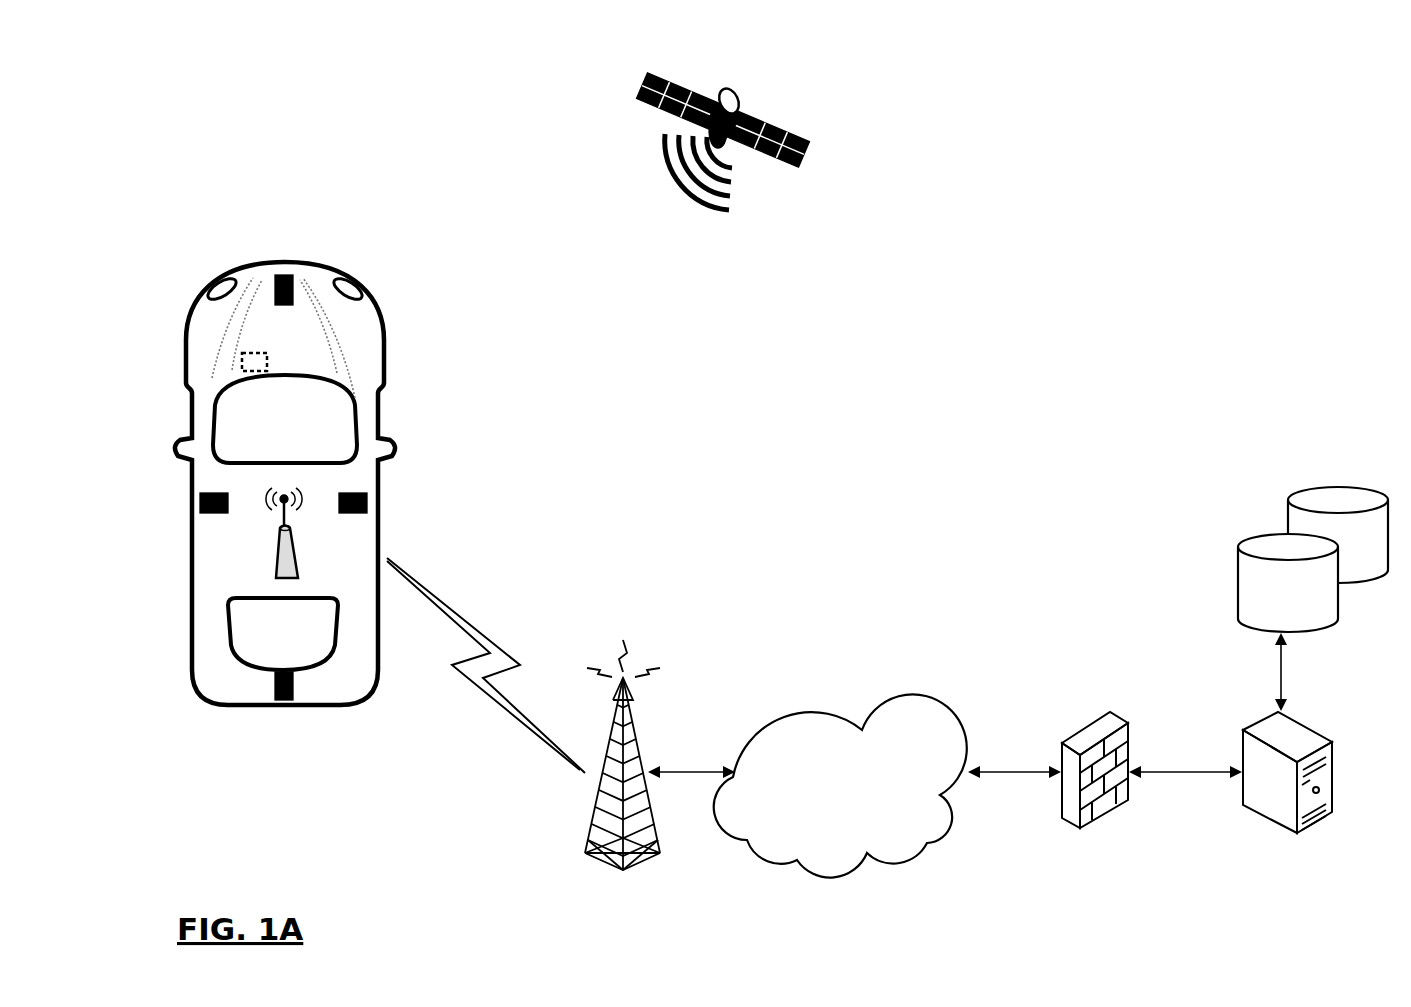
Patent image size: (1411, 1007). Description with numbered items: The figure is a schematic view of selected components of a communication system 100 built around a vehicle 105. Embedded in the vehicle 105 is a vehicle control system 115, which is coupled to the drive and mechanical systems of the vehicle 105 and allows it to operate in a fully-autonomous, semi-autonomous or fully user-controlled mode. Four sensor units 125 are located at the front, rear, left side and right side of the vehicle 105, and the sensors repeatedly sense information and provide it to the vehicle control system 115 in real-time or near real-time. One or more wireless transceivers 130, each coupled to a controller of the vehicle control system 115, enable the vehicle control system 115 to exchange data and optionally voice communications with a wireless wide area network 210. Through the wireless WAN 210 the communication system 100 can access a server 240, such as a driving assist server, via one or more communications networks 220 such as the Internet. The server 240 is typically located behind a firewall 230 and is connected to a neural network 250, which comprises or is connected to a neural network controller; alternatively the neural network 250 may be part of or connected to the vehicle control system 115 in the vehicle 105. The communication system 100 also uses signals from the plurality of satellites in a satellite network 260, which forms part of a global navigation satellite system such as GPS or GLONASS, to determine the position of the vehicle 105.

The communication system 100 is at (224, 82).
The vehicle 105 is at (375, 309).
The vehicle control system 115 is at (247, 353).
The sensor units 125 is at (283, 273).
The wireless transceivers 130 is at (275, 555).
The wireless wide area network (WAN) 210 is at (630, 785).
The communications networks 220 is at (840, 785).
The firewall 230 is at (1095, 796).
The server 240 is at (1287, 796).
The neural network 250 is at (1224, 559).
The satellite network 260 is at (729, 164).